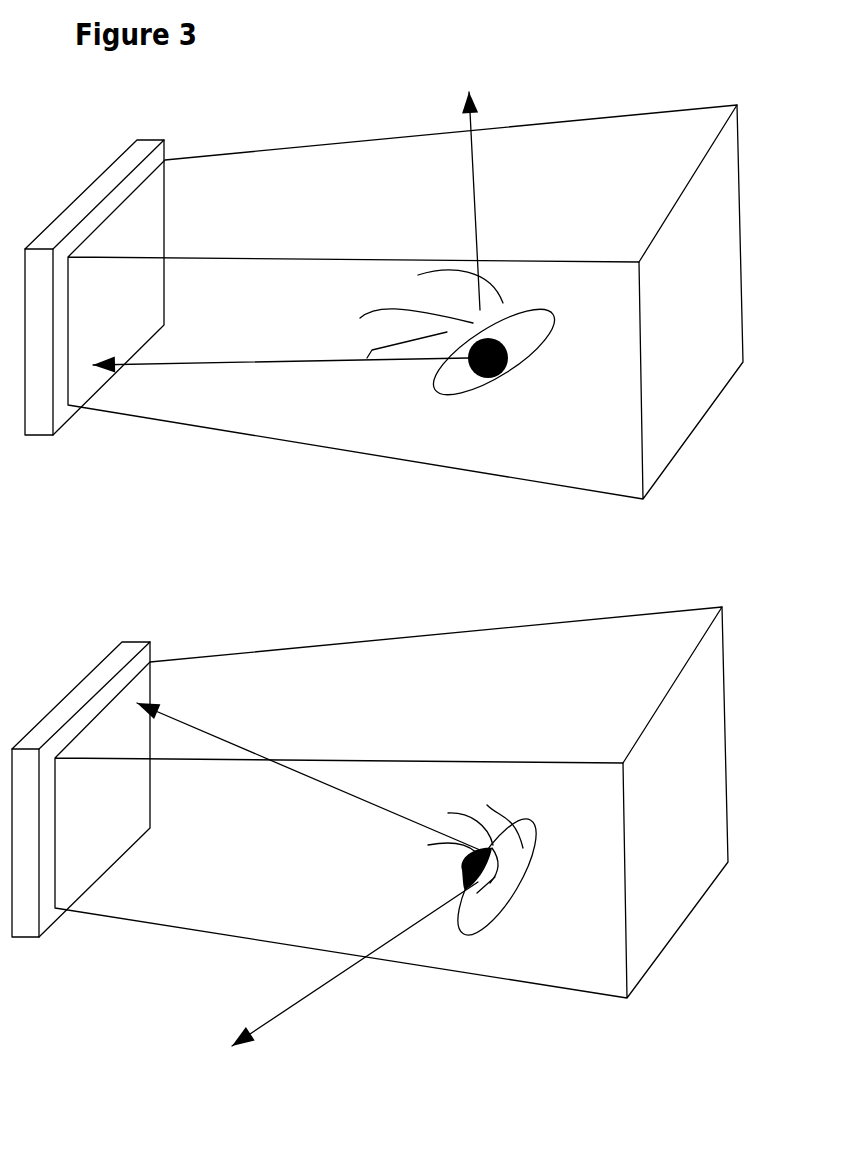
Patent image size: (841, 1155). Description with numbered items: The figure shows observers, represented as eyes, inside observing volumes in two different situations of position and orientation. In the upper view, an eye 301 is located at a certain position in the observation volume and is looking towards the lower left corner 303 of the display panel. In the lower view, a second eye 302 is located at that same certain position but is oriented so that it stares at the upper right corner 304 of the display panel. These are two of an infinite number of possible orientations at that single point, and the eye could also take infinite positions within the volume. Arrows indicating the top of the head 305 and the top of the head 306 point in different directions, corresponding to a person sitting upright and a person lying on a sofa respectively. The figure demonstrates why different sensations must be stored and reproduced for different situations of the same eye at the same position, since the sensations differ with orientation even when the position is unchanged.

The eye 301 is at (463, 361).
The second eye 302 is at (526, 884).
The lower left corner of the display panel 303 is at (280, 348).
The upper right corner of the display panel 304 is at (308, 764).
The top of the head 305 is at (476, 184).
The top of the head 306 is at (355, 973).